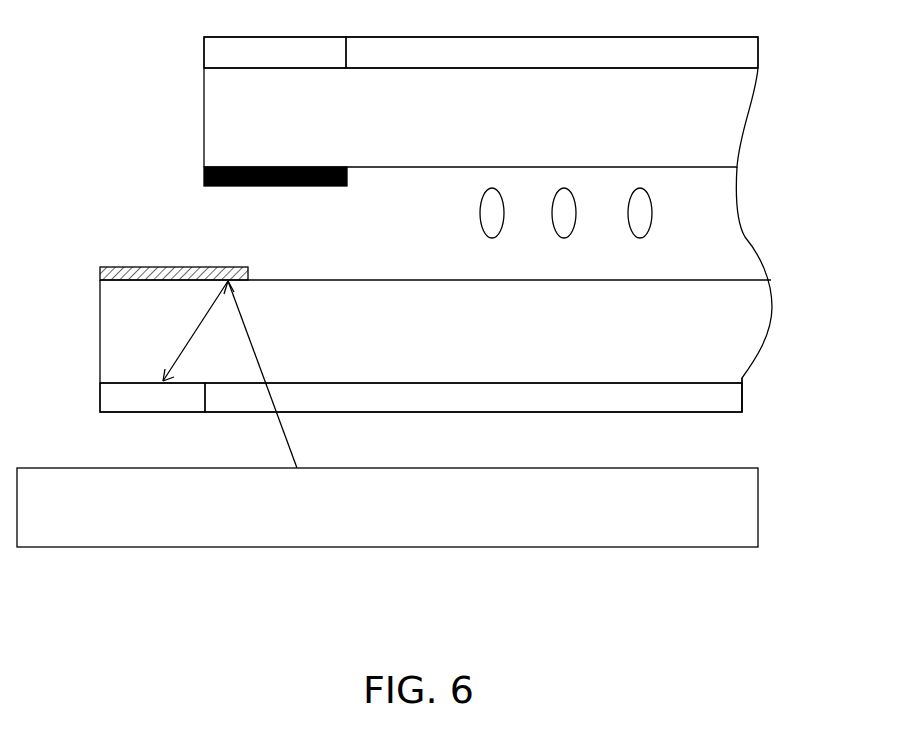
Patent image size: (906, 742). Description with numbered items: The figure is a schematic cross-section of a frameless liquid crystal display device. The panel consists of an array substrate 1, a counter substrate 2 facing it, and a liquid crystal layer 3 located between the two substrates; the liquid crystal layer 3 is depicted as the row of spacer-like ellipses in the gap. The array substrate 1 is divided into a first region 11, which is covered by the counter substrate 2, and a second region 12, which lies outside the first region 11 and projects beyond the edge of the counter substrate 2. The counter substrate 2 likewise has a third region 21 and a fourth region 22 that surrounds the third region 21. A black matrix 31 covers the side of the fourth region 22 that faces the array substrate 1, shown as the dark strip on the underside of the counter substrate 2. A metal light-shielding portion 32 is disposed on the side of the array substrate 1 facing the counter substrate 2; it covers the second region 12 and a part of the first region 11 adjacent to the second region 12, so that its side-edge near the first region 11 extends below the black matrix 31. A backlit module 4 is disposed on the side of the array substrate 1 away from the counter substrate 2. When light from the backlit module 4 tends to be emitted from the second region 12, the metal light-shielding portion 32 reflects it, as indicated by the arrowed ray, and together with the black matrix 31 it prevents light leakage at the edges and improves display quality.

The array substrate 1 is at (131, 357).
The first region 11 is at (473, 398).
The second region 12 is at (152, 398).
The counter substrate 2 is at (212, 131).
The third region 21 is at (552, 45).
The fourth region 22 is at (275, 45).
The liquid crystal layer 3 is at (640, 214).
The black matrix 31 is at (204, 170).
The metal light-shielding portion 32 is at (121, 267).
The backlit module 4 is at (668, 500).